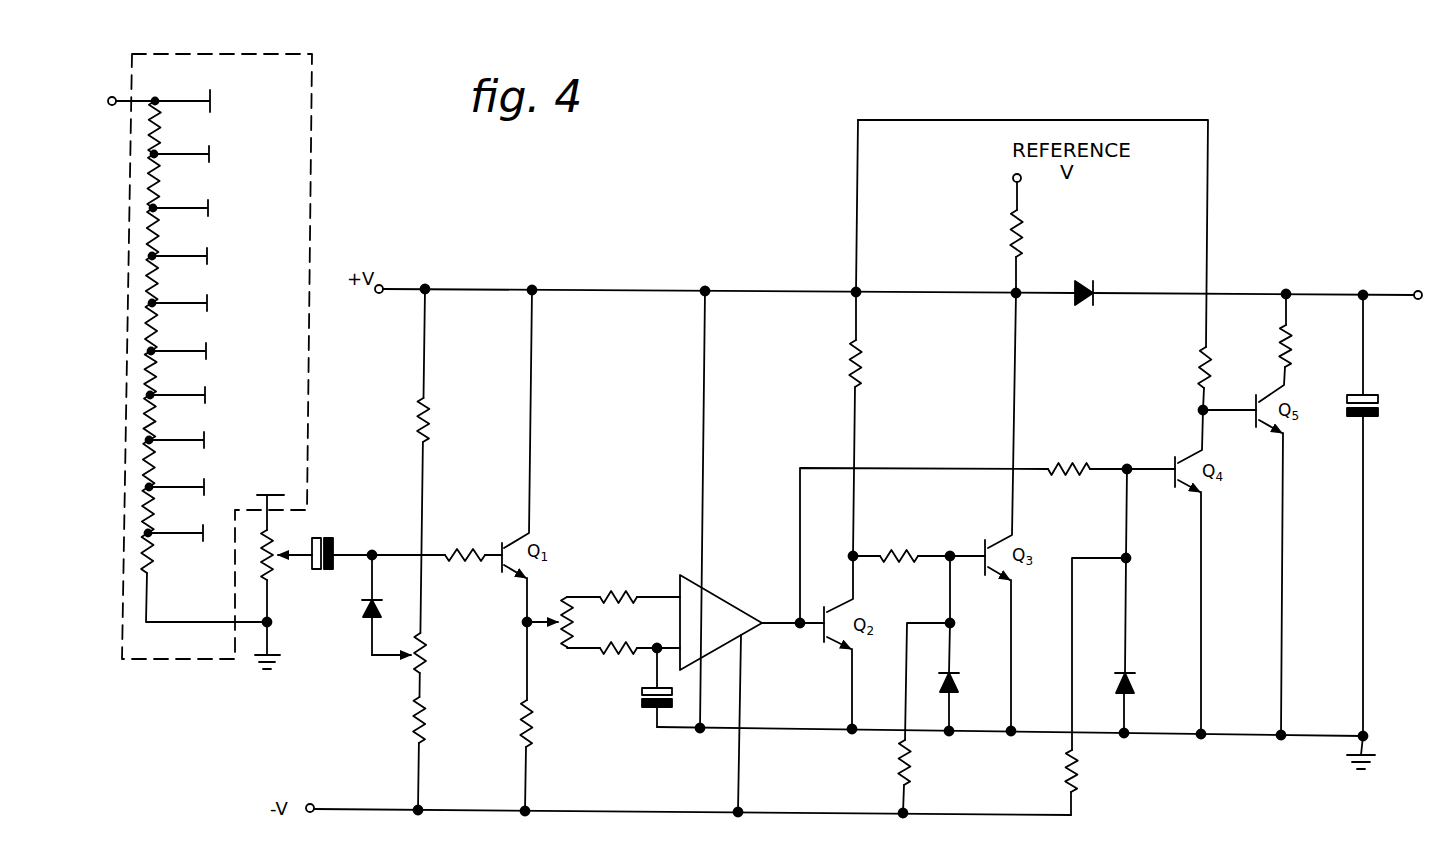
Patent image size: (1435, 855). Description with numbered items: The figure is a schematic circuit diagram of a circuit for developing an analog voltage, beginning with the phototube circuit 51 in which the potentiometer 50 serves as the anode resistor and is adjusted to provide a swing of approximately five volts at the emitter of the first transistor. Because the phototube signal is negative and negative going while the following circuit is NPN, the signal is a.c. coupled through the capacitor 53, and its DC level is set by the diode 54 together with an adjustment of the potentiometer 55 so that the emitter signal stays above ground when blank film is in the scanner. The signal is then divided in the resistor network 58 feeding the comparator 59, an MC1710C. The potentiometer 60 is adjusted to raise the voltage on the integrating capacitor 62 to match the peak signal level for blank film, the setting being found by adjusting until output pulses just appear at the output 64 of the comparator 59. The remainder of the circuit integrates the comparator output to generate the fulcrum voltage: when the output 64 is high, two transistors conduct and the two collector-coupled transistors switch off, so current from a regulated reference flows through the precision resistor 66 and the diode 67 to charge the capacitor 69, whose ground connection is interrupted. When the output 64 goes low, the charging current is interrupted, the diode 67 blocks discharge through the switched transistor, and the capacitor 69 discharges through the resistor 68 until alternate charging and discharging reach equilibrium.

The potentiometer 50 is at (282, 558).
The phototube circuit 51 is at (313, 201).
The capacitor 53 is at (333, 541).
The diode 54 is at (358, 623).
The potentiometer 55 is at (427, 663).
The resistor network 58 is at (629, 632).
The comparator 59 is at (721, 632).
The potentiometer 60 is at (560, 638).
The integrating capacitor 62 is at (646, 706).
The output 64 is at (765, 627).
The precision resistor 66 is at (1022, 232).
The diode 67 is at (1092, 282).
The resistor 68 is at (1290, 340).
The capacitor 69 is at (1380, 398).